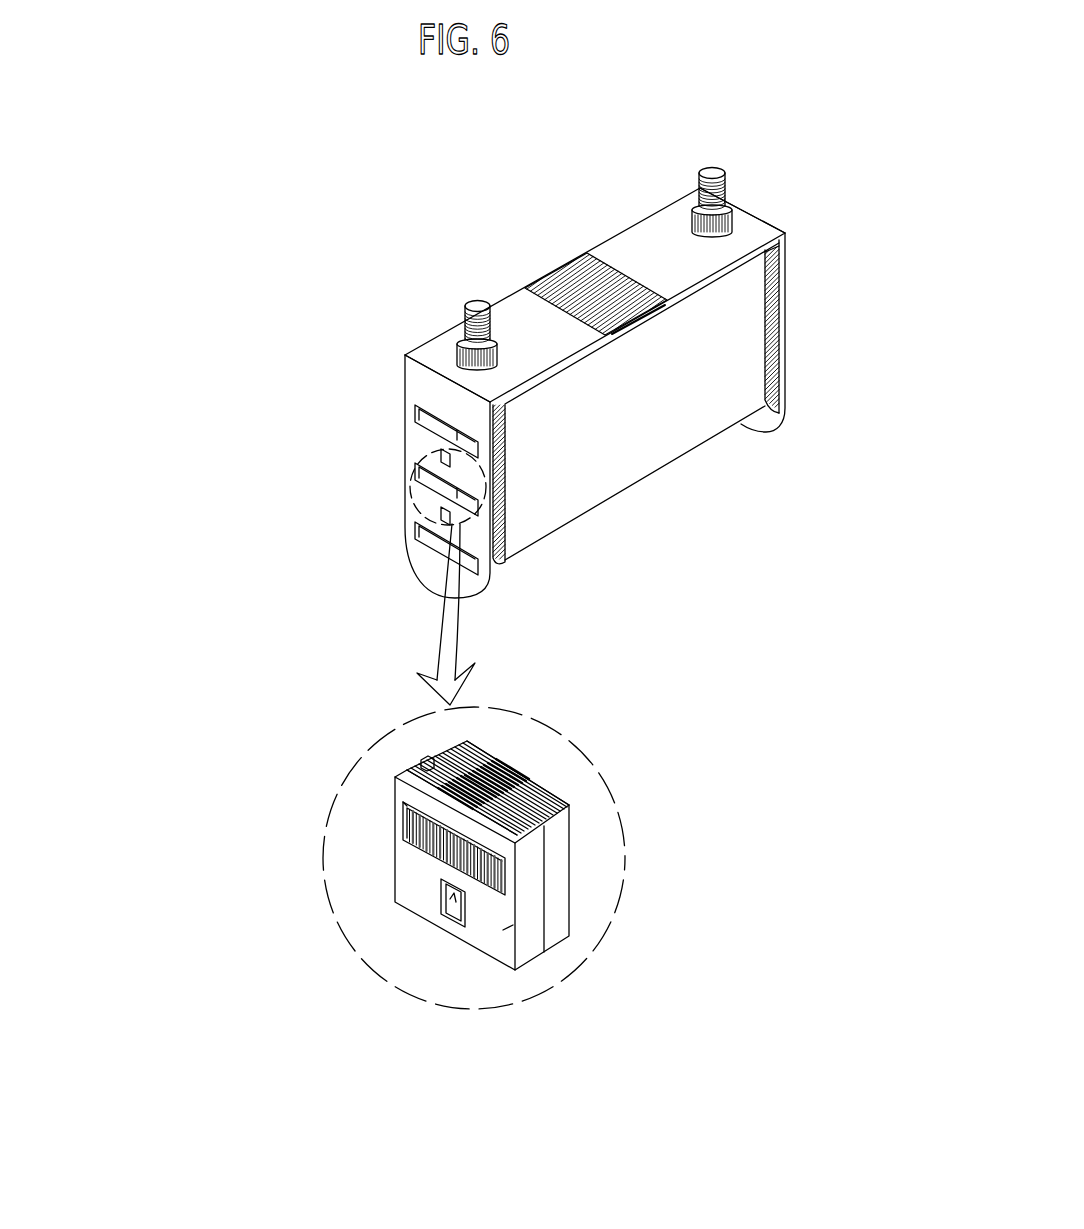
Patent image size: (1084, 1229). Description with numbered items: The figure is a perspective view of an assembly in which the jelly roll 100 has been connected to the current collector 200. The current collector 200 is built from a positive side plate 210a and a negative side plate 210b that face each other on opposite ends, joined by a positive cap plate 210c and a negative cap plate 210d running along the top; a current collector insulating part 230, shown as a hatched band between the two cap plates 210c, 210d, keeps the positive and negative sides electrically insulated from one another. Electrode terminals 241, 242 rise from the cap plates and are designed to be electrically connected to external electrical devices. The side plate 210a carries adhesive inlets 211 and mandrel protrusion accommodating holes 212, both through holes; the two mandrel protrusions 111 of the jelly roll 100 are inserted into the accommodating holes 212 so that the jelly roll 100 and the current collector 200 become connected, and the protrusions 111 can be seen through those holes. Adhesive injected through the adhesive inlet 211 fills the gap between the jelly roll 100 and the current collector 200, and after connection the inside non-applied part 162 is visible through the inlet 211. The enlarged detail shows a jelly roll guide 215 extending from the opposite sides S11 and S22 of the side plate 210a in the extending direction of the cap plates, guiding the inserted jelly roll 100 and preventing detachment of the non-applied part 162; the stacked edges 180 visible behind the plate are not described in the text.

The current collector 200 is at (335, 305).
The jelly roll 100 is at (628, 487).
The positive side plate 210a is at (405, 375).
The negative side plate 210b is at (783, 271).
The positive cap plate 210c is at (447, 348).
The negative cap plate 210d is at (667, 221).
The current collector insulating part 230 is at (563, 278).
The electrode terminal 241 is at (477, 307).
The electrode terminal 242 is at (713, 175).
The mandrel protrusion 111 is at (442, 455).
The positive non-applied part 162 is at (423, 767).
The heat sink fins 180 is at (558, 830).
The adhesive inlet 211 is at (407, 825).
The mandrel protrusion accommodating hole 212 is at (443, 898).
The jelly roll guide 215 is at (532, 888).
The side of side plate S11 is at (515, 918).
The side of side plate S22 is at (396, 815).